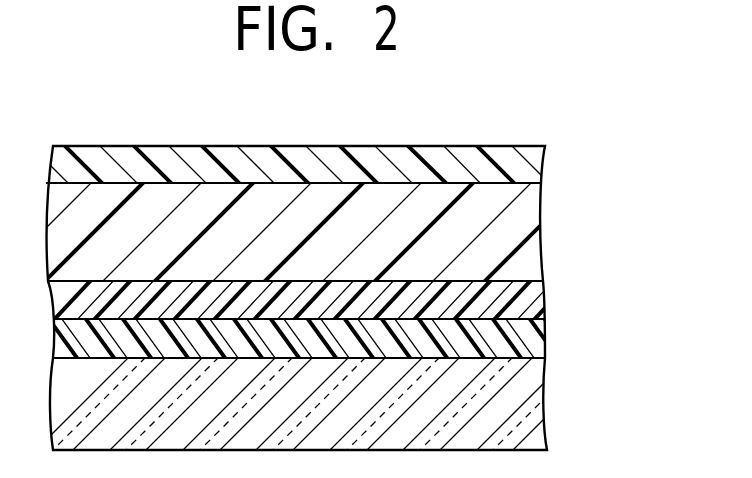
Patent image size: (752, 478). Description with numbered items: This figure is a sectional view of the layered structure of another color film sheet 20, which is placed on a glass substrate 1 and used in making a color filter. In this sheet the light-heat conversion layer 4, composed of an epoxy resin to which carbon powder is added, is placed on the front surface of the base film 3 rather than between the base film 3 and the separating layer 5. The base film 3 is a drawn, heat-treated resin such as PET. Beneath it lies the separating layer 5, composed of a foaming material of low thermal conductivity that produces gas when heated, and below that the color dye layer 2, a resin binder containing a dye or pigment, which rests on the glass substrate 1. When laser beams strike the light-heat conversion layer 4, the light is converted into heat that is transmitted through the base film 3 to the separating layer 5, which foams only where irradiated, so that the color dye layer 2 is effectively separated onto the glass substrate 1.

The glass substrate 1 is at (520, 412).
The color dye layer 2 is at (525, 337).
The base film 3 is at (503, 215).
The light-heat conversion layer 4 is at (510, 163).
The separating layer 5 is at (505, 308).
The color film sheet 20 is at (627, 150).